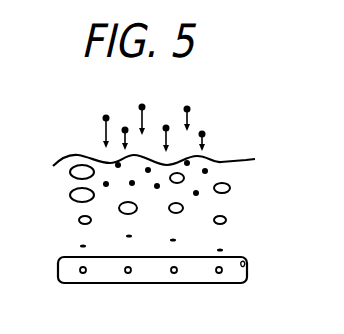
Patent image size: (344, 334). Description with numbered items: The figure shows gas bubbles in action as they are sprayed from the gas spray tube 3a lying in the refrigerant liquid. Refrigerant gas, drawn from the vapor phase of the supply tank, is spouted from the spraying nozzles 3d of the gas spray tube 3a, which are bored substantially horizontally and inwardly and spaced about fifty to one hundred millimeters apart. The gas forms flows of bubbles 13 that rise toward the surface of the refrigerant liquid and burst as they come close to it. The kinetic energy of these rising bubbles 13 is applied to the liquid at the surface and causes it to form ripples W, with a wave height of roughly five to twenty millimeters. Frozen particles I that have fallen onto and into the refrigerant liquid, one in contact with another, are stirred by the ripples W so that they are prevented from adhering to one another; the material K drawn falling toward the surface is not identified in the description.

The liquid droplets K is at (192, 103).
The ripples W is at (245, 160).
The frozen particles I is at (106, 188).
The bubbles 13 is at (226, 218).
The gas spray tube 3a is at (233, 263).
The spraying nozzles 3d is at (222, 272).